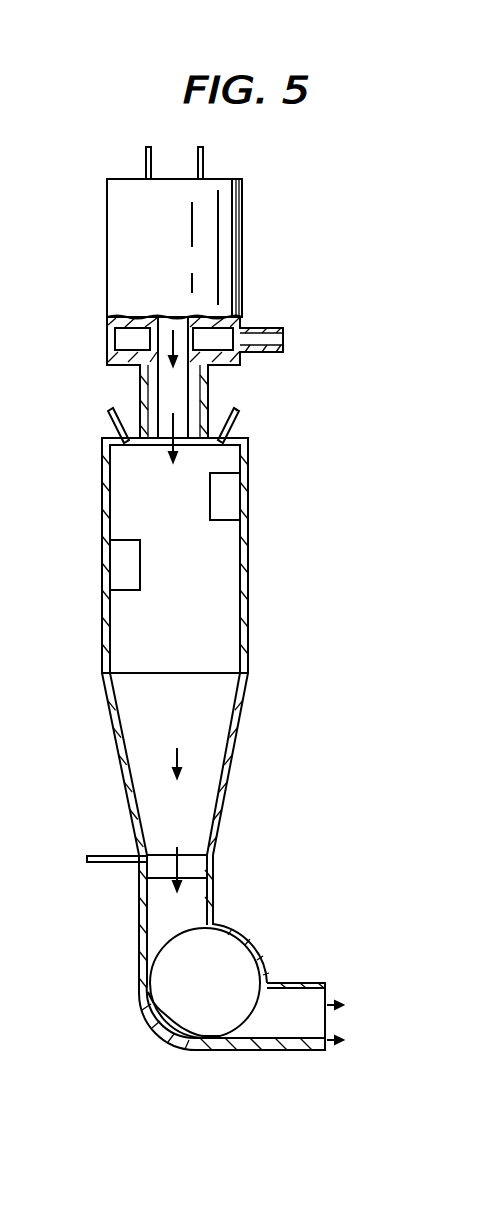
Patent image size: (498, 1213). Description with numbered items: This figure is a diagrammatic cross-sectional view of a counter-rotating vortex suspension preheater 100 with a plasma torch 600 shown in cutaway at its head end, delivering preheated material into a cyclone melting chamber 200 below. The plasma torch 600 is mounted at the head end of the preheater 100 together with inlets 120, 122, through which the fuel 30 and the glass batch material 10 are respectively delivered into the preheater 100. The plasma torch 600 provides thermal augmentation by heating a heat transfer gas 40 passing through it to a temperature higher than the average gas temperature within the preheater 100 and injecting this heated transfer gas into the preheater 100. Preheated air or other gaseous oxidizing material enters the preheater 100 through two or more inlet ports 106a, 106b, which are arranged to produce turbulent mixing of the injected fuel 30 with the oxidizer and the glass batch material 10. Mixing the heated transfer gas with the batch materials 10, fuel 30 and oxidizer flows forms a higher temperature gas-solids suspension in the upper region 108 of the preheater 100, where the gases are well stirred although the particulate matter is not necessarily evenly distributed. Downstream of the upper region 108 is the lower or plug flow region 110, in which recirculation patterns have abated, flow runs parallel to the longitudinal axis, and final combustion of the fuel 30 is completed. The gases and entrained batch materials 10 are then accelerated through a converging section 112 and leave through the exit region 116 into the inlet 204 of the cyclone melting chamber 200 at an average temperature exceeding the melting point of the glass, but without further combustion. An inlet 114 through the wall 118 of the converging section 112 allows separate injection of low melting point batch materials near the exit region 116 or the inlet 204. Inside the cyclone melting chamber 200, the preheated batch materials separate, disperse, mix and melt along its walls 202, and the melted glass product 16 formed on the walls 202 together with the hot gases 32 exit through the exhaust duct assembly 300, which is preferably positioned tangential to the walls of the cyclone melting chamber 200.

The glass batch material 10 is at (102, 423).
The melted glass product 16 is at (181, 1023).
The fuel 30 is at (246, 419).
The hot gases 32 is at (355, 1006).
The heat transfer gas 40 is at (286, 340).
The preheater 100 is at (253, 636).
The inlet port 106a is at (119, 560).
The inlet port 106b is at (237, 496).
The upper region 108 is at (212, 577).
The plug flow region 110 is at (195, 662).
The converging section 112 is at (192, 737).
The inlet 114 is at (93, 855).
The exit region 116 is at (175, 853).
The wall 118 is at (122, 777).
The inlet 120 is at (238, 426).
The inlet 122 is at (117, 408).
The cyclone melting chamber 200 is at (266, 951).
The walls 202 is at (238, 947).
The inlet 204 is at (219, 904).
The exhaust duct assembly 300 is at (277, 1058).
The plasma torch 600 is at (247, 255).